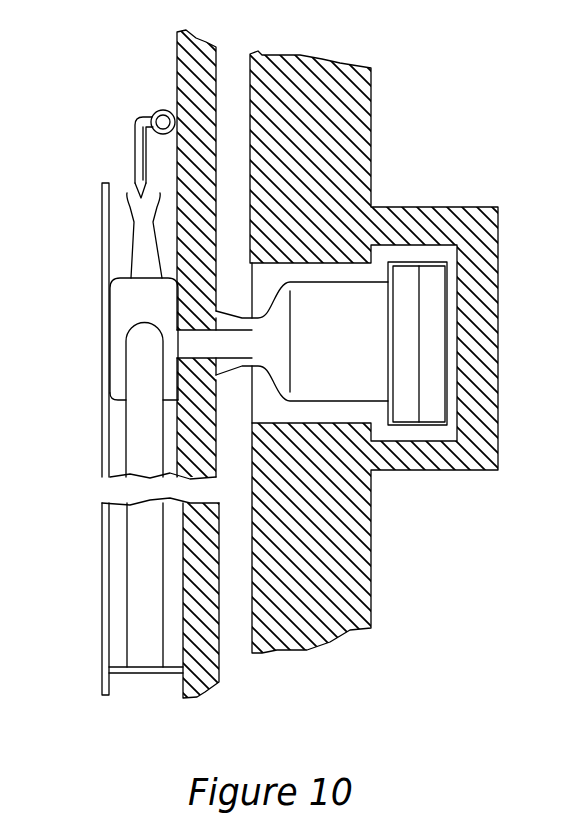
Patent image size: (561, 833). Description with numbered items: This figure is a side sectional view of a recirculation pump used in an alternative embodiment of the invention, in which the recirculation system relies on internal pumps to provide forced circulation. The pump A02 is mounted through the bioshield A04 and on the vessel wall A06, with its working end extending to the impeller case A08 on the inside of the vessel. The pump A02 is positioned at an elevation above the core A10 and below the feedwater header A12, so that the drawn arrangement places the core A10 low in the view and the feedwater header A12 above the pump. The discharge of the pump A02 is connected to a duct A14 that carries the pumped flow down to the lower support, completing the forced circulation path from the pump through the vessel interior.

The pump A02 is at (353, 352).
The bioshield A04 is at (371, 600).
The vessel wall A06 is at (219, 655).
The impeller case A08 is at (131, 303).
The core A10 is at (140, 587).
The feedwater header A12 is at (135, 137).
The duct A14 is at (403, 430).